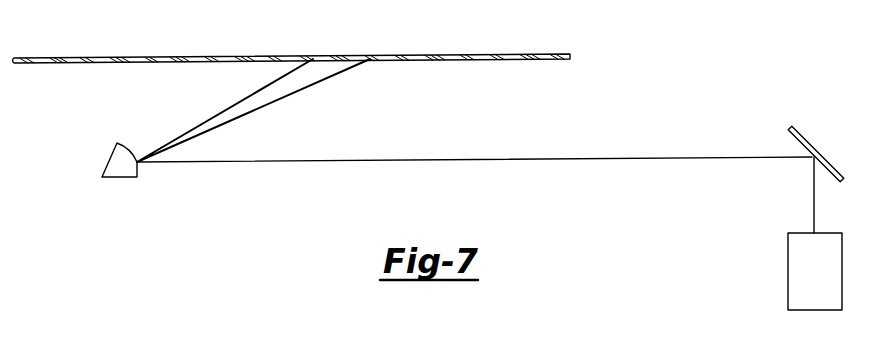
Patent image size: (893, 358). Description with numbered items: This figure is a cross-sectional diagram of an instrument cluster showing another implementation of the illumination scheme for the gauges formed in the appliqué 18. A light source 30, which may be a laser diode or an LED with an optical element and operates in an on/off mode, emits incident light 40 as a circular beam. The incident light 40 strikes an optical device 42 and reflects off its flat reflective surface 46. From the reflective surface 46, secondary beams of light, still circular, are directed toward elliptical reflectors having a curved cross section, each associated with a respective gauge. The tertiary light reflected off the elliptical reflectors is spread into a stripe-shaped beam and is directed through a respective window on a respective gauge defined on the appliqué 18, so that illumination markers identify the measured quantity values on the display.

The appliqué 18 is at (122, 58).
The light source 30 is at (788, 277).
The incident light 40 is at (814, 198).
The optical device 42 is at (807, 142).
The flat reflective surface 46 is at (792, 137).